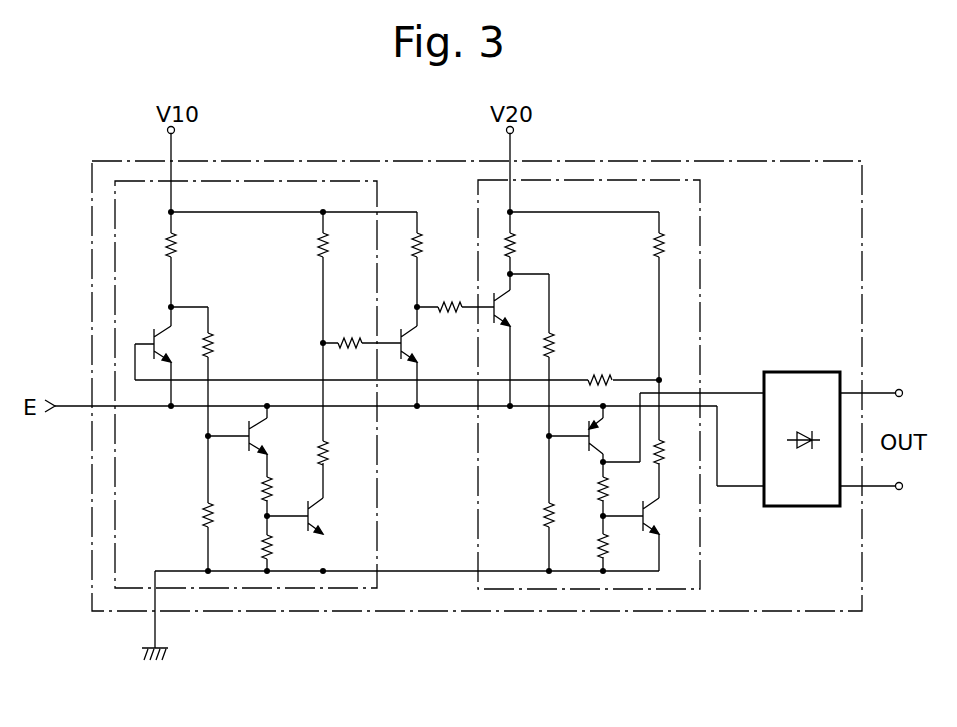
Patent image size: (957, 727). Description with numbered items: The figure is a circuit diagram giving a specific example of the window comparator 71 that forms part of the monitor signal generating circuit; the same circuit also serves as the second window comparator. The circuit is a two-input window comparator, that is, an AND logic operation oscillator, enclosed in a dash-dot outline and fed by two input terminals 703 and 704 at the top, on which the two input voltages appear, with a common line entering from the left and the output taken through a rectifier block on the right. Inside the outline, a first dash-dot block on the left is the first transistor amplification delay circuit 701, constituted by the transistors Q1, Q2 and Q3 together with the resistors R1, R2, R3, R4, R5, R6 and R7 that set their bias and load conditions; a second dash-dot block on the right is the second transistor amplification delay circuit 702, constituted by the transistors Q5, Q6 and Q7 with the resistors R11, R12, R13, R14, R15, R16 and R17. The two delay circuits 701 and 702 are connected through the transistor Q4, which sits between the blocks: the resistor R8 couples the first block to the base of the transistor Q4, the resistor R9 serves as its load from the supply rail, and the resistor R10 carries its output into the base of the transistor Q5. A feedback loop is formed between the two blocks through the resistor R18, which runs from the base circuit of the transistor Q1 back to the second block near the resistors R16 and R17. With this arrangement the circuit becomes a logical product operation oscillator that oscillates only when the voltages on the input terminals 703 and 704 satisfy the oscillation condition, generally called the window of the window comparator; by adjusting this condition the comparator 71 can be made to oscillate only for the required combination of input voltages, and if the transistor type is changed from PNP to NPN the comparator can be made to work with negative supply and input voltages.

The window comparator 71 is at (776, 161).
The first transistor amplification delay circuit 701 is at (308, 181).
The second transistor amplification delay circuit 702 is at (648, 180).
The input terminal 703 is at (175, 130).
The input terminal 704 is at (514, 130).
The resistor R1 is at (177, 245).
The resistor R2 is at (214, 345).
The resistor R3 is at (202, 515).
The resistor R4 is at (273, 489).
The resistor R5 is at (273, 547).
The resistor R6 is at (329, 245).
The resistor R7 is at (329, 453).
The resistor R8 is at (350, 338).
The resistor R9 is at (423, 245).
The resistor R10 is at (450, 302).
The resistor R11 is at (516, 245).
The resistor R12 is at (555, 345).
The resistor R13 is at (543, 515).
The resistor R14 is at (597, 489).
The resistor R15 is at (597, 546).
The resistor R16 is at (653, 245).
The resistor R17 is at (654, 455).
The resistor R18 is at (600, 375).
The transistor Q1 is at (158, 345).
The transistor Q2 is at (253, 436).
The transistor Q3 is at (312, 516).
The transistor Q4 is at (405, 345).
The transistor Q5 is at (498, 309).
The transistor Q6 is at (593, 436).
The transistor Q7 is at (647, 516).